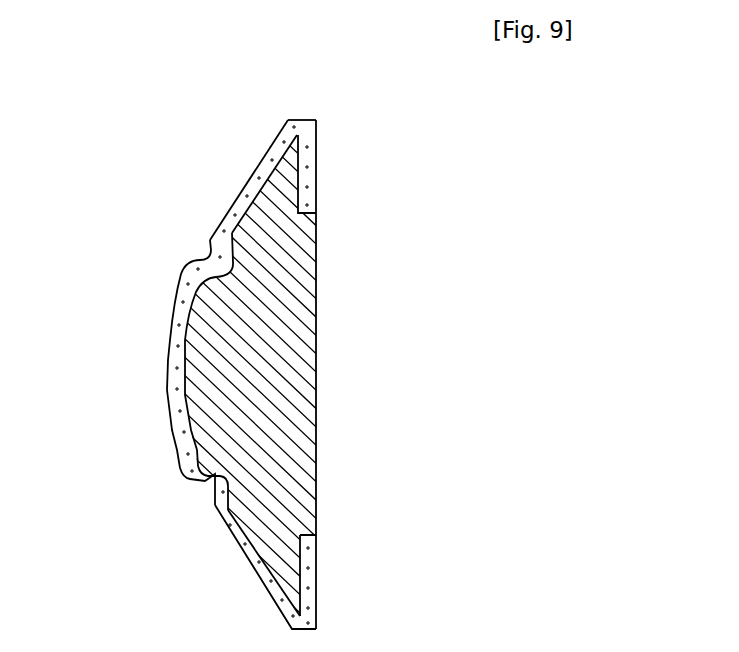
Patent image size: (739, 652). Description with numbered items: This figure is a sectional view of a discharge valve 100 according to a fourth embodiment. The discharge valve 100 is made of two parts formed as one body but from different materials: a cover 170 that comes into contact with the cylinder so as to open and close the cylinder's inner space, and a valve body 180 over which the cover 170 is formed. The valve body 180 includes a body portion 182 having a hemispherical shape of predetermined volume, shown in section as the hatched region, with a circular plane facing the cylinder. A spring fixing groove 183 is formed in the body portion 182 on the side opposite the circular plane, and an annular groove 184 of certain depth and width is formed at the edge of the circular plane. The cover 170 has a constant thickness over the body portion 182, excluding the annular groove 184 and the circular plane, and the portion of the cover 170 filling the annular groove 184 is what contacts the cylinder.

The discharge valve 100 is at (320, 82).
The valve body 180 is at (323, 463).
The annular groove 184 is at (312, 167).
The body portion 182 is at (220, 333).
The spring fixing groove 183 is at (205, 482).
The cover 170 is at (242, 583).